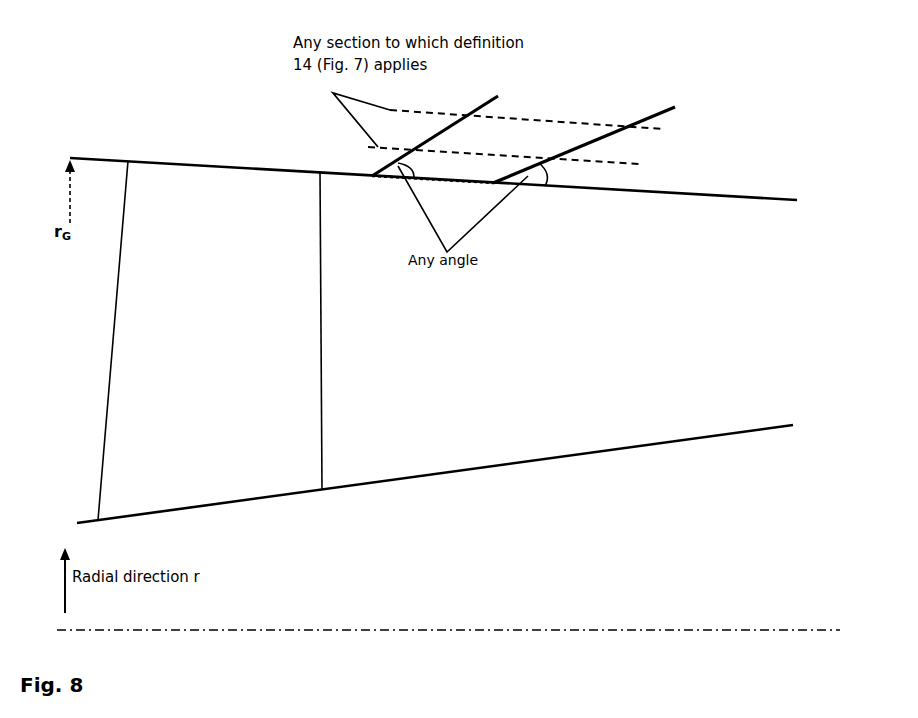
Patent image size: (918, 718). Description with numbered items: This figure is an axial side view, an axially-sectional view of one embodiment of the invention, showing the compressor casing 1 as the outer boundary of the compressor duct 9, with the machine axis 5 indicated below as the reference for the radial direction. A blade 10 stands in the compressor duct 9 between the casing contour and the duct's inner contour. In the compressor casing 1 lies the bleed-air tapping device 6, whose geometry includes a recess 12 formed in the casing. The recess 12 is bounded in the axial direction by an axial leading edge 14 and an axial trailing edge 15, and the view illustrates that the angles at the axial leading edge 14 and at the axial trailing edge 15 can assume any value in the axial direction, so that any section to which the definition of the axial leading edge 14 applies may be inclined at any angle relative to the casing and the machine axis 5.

The compressor casing 1 is at (108, 161).
The machine axis 5 is at (448, 615).
The bleed-air tapping device 6 is at (567, 143).
The compressor duct 9 is at (553, 447).
The blade 10 is at (253, 463).
The recess 12 is at (403, 208).
The axial leading edge 14 is at (372, 175).
The axial trailing edge 15 is at (497, 185).